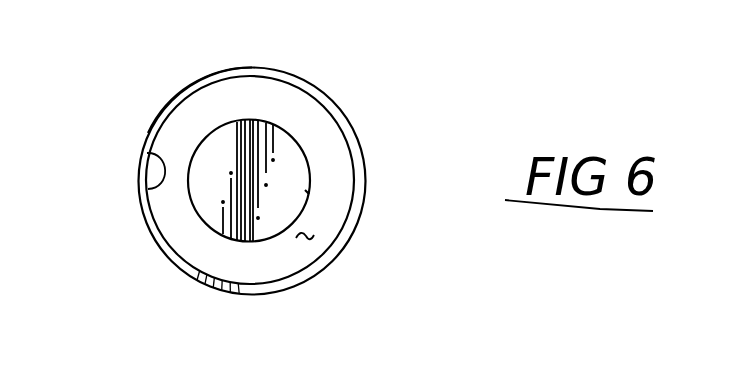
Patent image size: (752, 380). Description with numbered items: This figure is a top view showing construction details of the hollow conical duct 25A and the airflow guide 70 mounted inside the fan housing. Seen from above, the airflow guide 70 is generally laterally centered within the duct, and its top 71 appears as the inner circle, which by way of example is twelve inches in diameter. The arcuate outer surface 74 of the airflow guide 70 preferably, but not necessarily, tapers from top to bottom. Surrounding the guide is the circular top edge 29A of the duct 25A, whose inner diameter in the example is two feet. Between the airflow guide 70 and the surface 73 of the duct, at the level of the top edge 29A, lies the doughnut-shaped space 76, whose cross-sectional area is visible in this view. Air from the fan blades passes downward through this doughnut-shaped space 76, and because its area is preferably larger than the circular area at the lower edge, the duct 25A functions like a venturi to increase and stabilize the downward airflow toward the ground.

The hollow conical duct 25A is at (150, 264).
The top edge 29A is at (178, 103).
The airflow guide 70 is at (310, 148).
The top of guide 71 is at (214, 149).
The surface 73 is at (147, 153).
The arcuate outer surface 74 is at (307, 194).
The doughnut-shaped space 76 is at (301, 239).